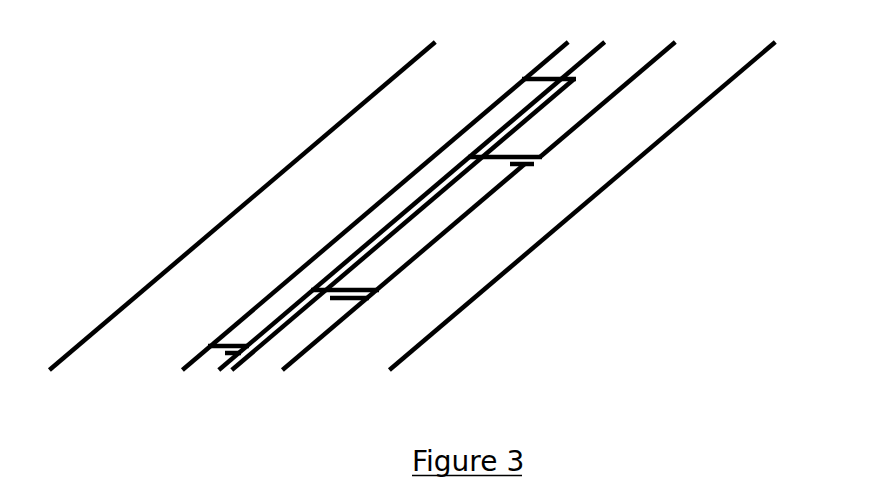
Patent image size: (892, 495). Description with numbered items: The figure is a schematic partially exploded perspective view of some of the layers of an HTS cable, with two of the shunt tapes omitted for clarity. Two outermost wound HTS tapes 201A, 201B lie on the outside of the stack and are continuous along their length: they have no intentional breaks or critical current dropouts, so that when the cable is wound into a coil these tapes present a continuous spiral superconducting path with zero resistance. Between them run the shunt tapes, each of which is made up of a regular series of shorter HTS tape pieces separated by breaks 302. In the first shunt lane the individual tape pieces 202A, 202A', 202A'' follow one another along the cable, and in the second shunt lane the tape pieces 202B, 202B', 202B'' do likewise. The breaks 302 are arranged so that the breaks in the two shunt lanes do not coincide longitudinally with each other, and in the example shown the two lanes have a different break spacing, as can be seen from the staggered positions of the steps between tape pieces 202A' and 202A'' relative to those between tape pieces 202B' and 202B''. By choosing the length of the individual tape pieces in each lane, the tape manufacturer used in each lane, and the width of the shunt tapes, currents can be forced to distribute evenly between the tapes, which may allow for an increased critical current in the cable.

The outermost wound HTS tape 201A is at (302, 192).
The outermost wound HTS tape 201B is at (465, 288).
The shunt HTS tape piece 202A is at (144, 302).
The shunt HTS tape piece 202A' is at (344, 206).
The shunt HTS tape piece 202A'' is at (396, 76).
The shunt HTS tape piece 202B is at (433, 329).
The shunt HTS tape piece 202B' is at (502, 206).
The shunt HTS tape piece 202B'' is at (624, 169).
The break 302 is at (537, 165).